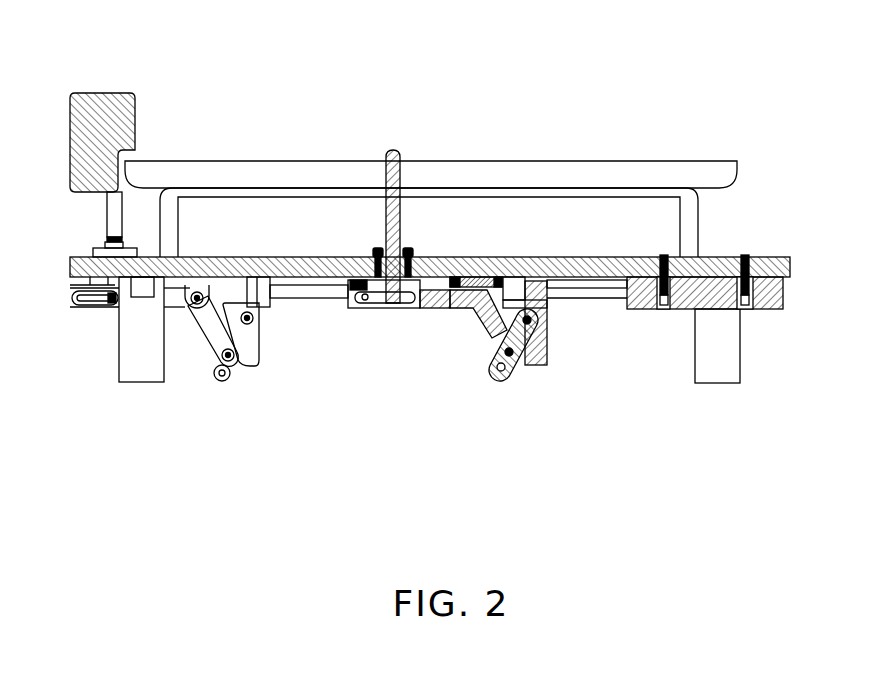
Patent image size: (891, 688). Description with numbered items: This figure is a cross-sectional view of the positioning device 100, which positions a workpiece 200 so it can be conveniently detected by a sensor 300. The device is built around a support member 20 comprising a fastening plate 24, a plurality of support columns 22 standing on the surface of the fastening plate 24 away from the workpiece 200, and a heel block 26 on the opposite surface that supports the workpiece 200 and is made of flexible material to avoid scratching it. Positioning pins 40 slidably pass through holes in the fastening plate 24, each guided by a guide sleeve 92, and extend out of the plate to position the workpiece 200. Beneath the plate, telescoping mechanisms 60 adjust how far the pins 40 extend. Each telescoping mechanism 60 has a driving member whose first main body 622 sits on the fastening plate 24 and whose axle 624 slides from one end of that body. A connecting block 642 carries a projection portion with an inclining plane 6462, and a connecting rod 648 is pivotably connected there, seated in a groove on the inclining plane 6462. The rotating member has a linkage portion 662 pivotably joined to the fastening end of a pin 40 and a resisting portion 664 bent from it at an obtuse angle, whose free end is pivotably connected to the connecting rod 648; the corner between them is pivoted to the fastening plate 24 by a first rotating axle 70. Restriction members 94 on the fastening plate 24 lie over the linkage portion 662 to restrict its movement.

The positioning device 100 is at (458, 40).
The sensor 300 is at (93, 103).
The workpiece 200 is at (627, 172).
The heel block 26 is at (692, 228).
The positioning pins 40 is at (393, 150).
The guide sleeves 92 is at (373, 250).
The support member 20 is at (467, 309).
The fastening plate 24 is at (785, 257).
The support columns 22 is at (730, 365).
The first main body 622 is at (782, 292).
The axle 624 is at (600, 297).
The restriction members 94 is at (347, 288).
The telescoping mechanisms 60 is at (492, 363).
The linkage portion 662 is at (433, 308).
The first rotating axle 70 is at (470, 300).
The resisting portion 664 is at (482, 337).
The connecting block 642 is at (555, 308).
The inclining plane 6462 is at (537, 345).
The connecting rod 648 is at (507, 372).